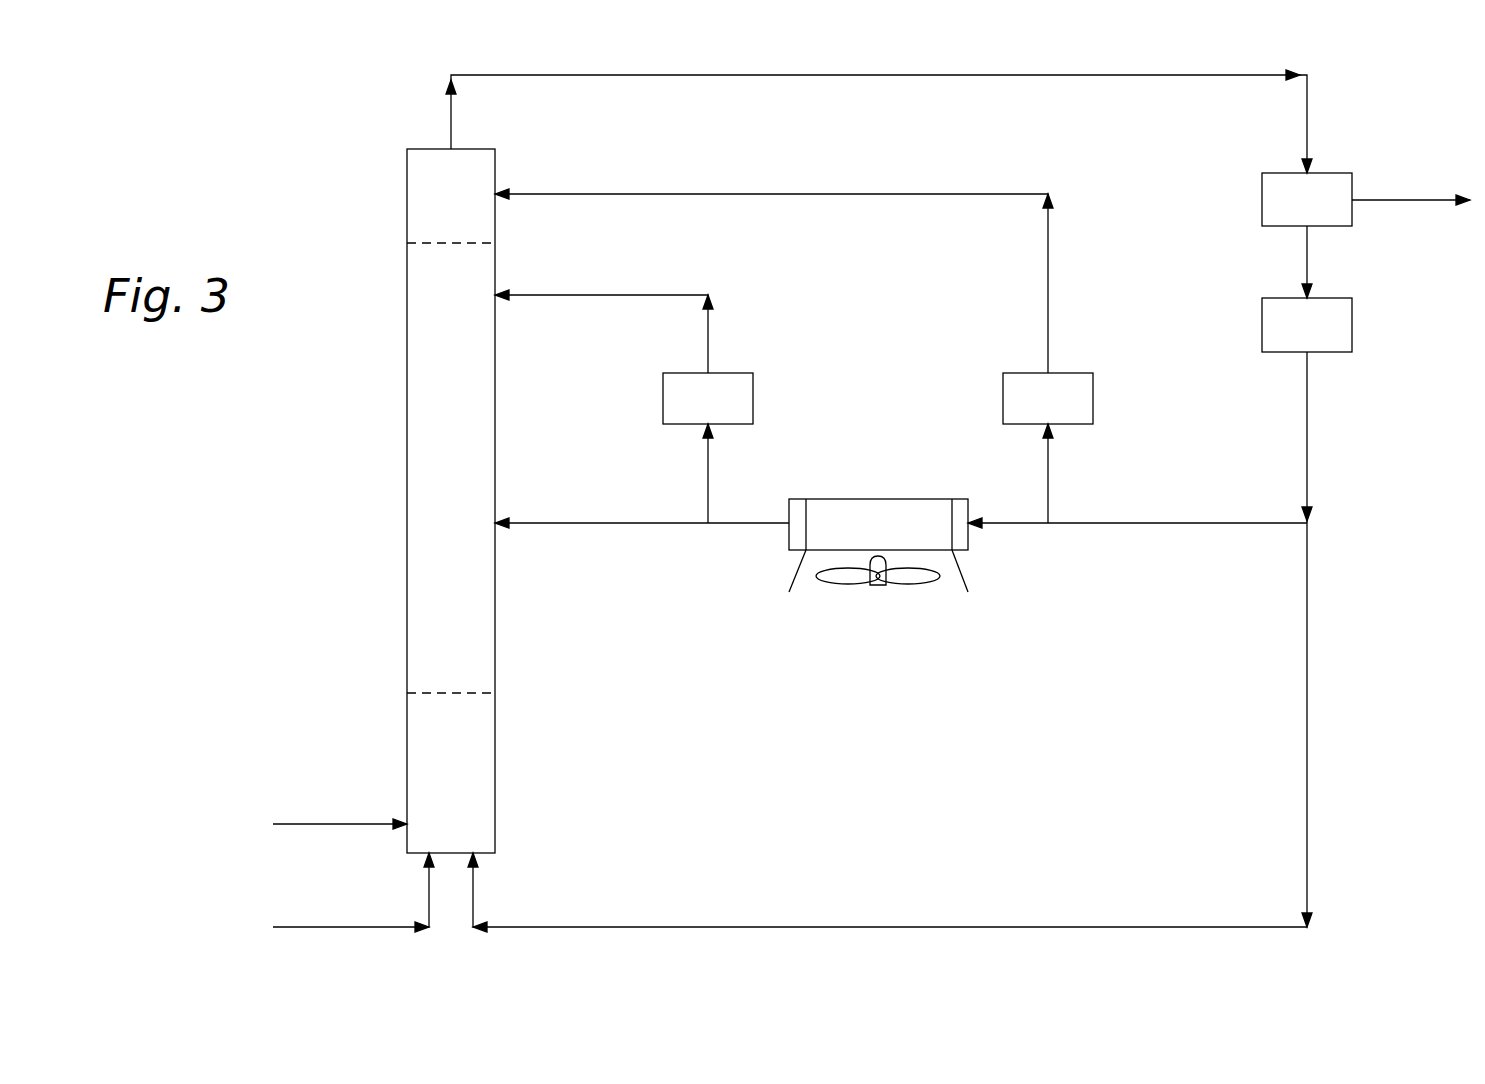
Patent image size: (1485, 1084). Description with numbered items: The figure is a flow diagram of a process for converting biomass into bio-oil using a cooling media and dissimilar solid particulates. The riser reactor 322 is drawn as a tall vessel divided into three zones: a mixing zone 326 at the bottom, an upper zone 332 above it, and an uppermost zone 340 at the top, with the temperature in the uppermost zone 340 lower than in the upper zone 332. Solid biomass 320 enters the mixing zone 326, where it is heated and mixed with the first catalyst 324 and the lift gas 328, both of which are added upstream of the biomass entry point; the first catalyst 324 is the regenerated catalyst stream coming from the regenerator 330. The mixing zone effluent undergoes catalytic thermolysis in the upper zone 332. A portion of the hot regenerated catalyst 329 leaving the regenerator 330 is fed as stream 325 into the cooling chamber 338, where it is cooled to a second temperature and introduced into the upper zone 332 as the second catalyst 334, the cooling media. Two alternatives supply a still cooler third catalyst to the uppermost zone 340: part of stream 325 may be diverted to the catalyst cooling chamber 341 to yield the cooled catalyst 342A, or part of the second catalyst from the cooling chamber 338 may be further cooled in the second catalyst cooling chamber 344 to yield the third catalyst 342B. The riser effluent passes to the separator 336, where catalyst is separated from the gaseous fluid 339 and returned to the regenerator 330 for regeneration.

The solid biomass 320 is at (315, 822).
The riser reactor 322 is at (470, 367).
The first catalyst 324 is at (593, 926).
The stream of hot regenerated catalyst 325 is at (1205, 521).
The mixing zone 326 is at (482, 770).
The lift gas 328 is at (315, 926).
The hot regenerated catalyst 329 is at (1307, 481).
The regenerator 330 is at (1330, 337).
The upper zone 332 is at (420, 497).
The second catalyst 334 is at (594, 521).
The separator 336 is at (1330, 212).
The cooling chamber 338 is at (901, 538).
The gaseous fluid 339 is at (1418, 198).
The uppermost zone 340 is at (420, 197).
The catalyst cooling chamber 341 is at (1071, 411).
The cooled catalyst 342A is at (594, 192).
The third catalyst 342B is at (608, 297).
The second catalyst cooling chamber 344 is at (731, 411).